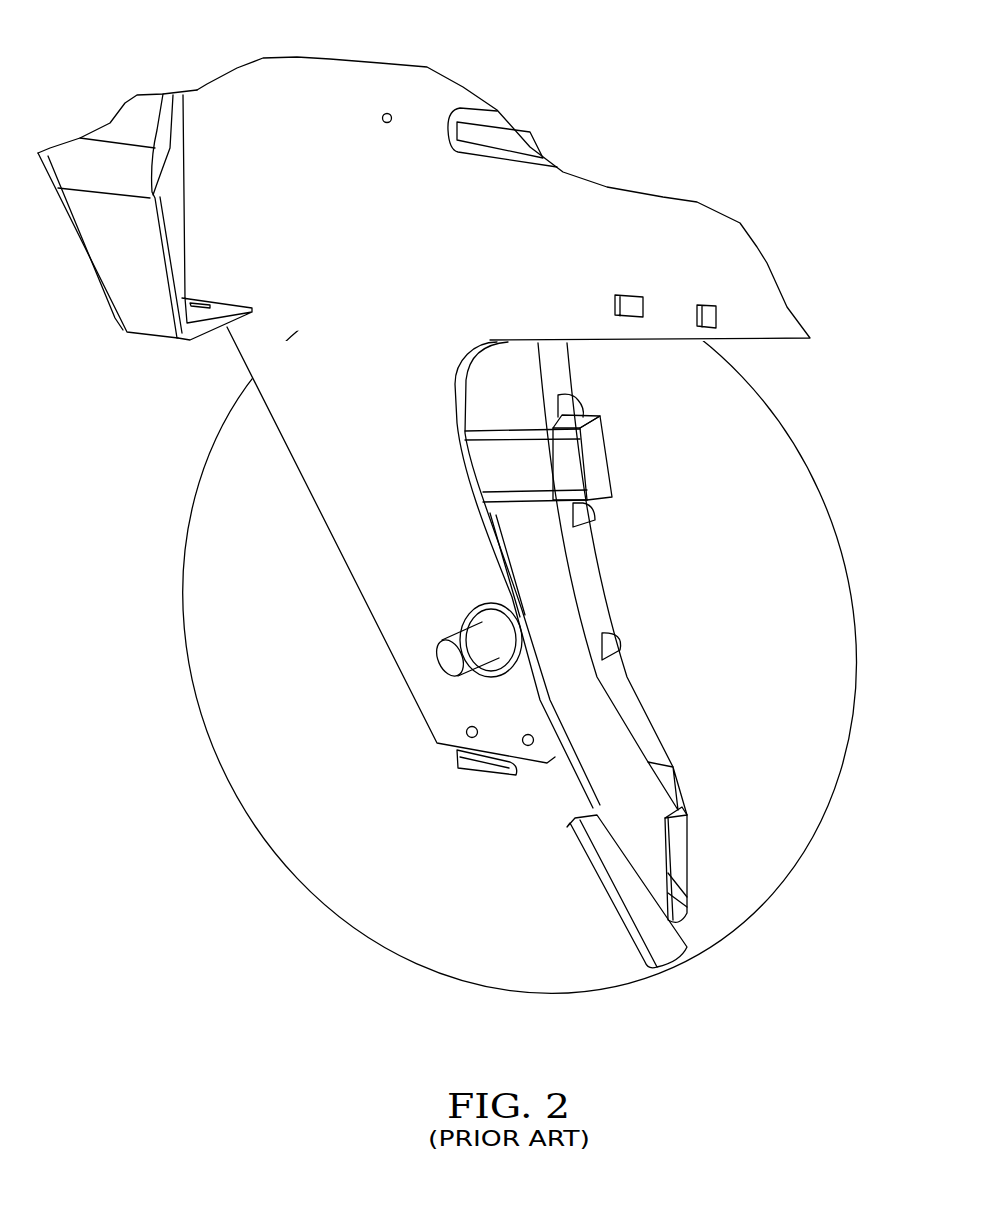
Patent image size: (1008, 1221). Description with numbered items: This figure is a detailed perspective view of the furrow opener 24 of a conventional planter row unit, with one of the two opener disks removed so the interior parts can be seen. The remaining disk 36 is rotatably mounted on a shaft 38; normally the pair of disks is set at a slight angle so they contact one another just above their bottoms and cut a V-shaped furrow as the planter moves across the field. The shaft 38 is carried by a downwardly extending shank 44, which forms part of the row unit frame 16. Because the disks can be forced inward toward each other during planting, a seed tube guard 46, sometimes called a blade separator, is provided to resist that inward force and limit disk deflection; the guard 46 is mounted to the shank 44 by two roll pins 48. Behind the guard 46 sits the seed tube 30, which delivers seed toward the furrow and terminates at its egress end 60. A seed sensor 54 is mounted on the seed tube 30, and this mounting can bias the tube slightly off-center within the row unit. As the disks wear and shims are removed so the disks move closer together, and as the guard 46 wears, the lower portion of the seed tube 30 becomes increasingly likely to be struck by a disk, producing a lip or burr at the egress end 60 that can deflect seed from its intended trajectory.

The furrow opener 24 is at (657, 73).
The row unit frame 16 is at (153, 315).
The shank 44 is at (342, 485).
The disk 36 is at (242, 663).
The seed tube 30 is at (585, 597).
The seed sensor 54 is at (592, 474).
The shaft 38 is at (450, 670).
The roll pins 48 is at (530, 746).
The seed tube guard 46 is at (542, 805).
The egress end 60 is at (692, 908).